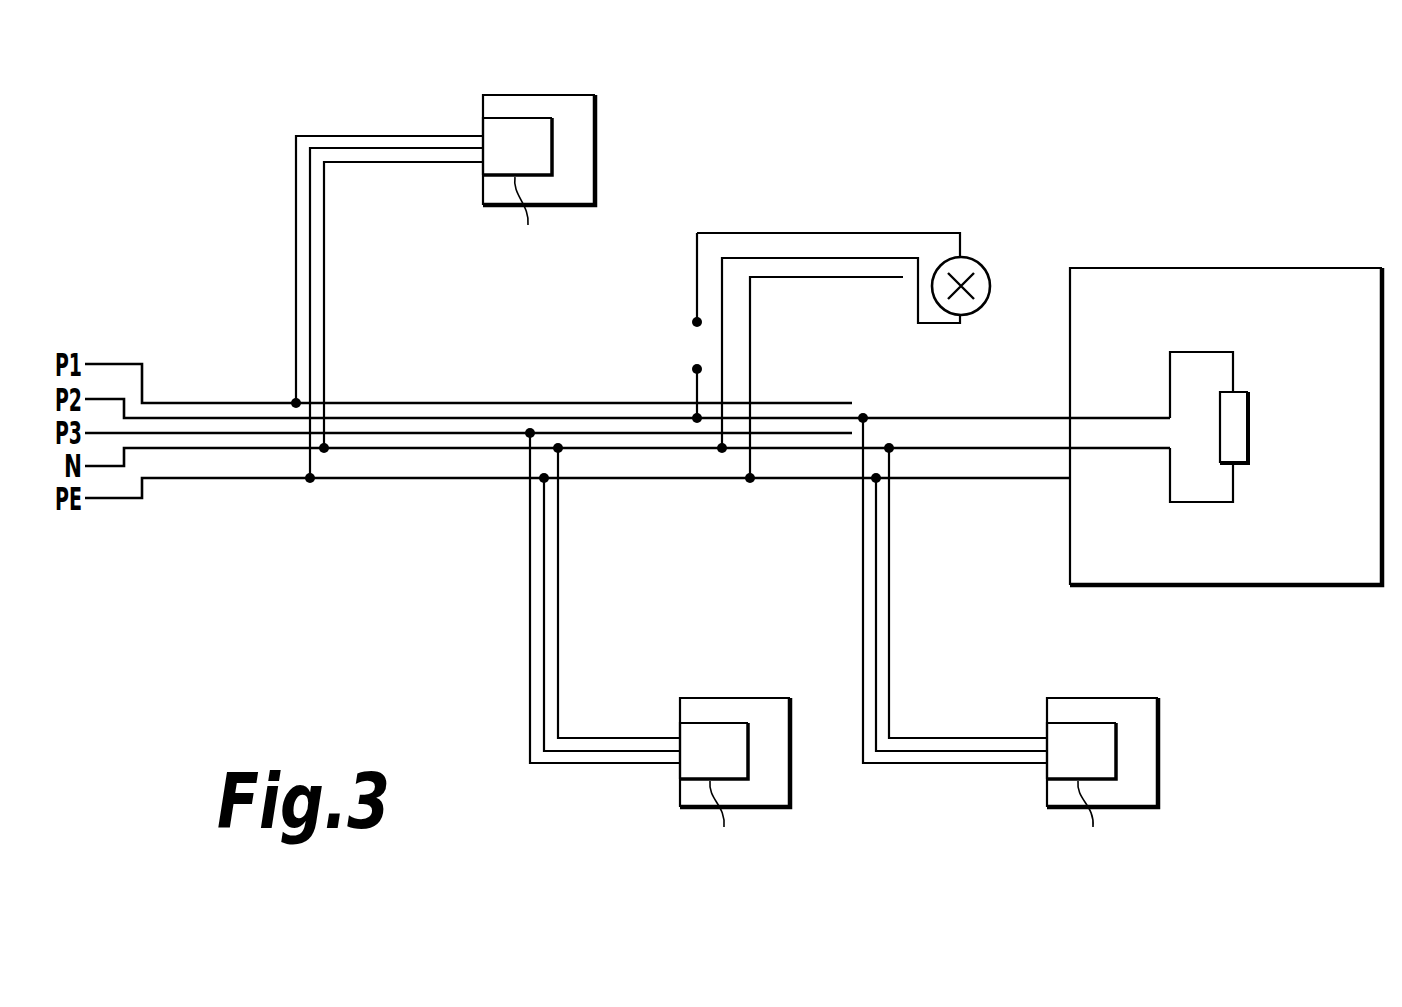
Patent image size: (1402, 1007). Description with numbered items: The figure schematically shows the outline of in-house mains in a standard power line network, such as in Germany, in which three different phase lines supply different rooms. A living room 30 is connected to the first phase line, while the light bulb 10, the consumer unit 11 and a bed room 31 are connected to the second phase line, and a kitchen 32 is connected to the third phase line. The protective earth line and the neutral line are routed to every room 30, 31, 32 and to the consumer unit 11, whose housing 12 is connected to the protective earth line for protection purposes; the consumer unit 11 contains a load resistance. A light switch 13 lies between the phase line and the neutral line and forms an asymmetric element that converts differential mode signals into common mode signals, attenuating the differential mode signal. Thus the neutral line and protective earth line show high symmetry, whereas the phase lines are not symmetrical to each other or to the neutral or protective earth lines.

The light bulb 10 is at (975, 262).
The consumer unit 11 is at (1337, 331).
The housing 12 is at (1226, 375).
The light switch 13 is at (693, 322).
The living room 30 is at (548, 100).
The bed room 31 is at (1160, 755).
The kitchen 32 is at (743, 703).